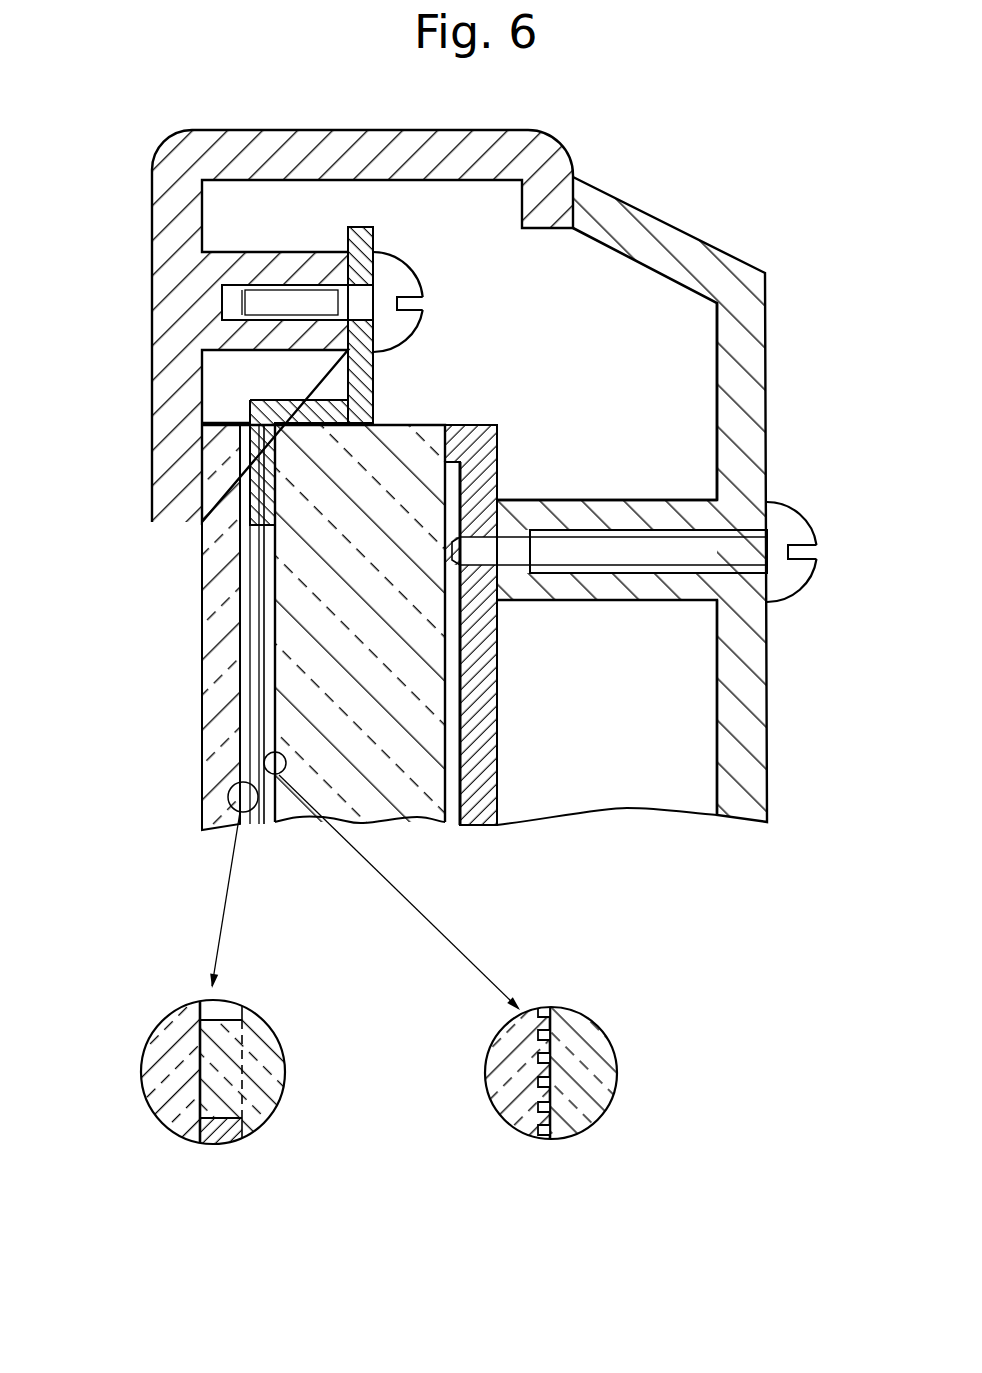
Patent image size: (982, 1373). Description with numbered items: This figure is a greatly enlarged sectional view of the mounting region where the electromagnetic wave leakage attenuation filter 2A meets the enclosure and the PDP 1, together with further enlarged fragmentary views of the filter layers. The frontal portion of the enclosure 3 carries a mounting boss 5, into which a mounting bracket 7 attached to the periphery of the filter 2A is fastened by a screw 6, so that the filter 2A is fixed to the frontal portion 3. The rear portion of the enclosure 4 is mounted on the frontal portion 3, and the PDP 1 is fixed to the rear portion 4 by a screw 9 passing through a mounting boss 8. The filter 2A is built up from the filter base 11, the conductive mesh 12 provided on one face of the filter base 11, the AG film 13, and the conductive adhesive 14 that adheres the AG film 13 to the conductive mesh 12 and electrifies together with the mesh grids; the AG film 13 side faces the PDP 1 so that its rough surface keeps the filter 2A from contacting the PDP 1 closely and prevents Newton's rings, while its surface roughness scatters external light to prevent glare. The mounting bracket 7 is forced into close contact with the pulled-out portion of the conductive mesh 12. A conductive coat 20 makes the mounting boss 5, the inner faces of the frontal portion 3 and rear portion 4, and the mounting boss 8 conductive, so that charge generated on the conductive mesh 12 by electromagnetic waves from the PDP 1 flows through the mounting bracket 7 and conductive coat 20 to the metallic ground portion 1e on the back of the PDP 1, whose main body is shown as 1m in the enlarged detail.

The PDP 1 is at (467, 787).
The main body portion of member 1 1m is at (420, 805).
The metallic portion (ground) 1e is at (483, 825).
The electromagnetic wave leakage attenuation filter 2A is at (303, 812).
The frontal portion of enclosure 3 is at (192, 150).
The rear portion of enclosure 4 is at (625, 210).
The mounting boss 5 is at (263, 270).
The screw 6 is at (405, 325).
The mounting bracket 7 is at (365, 235).
The mounting boss 8 is at (620, 592).
The screw 9 is at (793, 523).
The filter base 11 is at (212, 640).
The conductive mesh 12 is at (243, 672).
The AG (Anti-Glare) film 13 is at (113, 622).
The conductive adhesive 14 is at (257, 706).
The conductive coat 20 is at (547, 230).